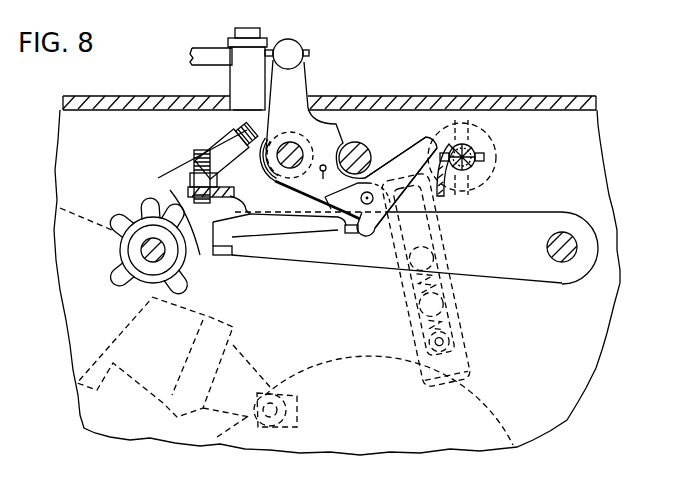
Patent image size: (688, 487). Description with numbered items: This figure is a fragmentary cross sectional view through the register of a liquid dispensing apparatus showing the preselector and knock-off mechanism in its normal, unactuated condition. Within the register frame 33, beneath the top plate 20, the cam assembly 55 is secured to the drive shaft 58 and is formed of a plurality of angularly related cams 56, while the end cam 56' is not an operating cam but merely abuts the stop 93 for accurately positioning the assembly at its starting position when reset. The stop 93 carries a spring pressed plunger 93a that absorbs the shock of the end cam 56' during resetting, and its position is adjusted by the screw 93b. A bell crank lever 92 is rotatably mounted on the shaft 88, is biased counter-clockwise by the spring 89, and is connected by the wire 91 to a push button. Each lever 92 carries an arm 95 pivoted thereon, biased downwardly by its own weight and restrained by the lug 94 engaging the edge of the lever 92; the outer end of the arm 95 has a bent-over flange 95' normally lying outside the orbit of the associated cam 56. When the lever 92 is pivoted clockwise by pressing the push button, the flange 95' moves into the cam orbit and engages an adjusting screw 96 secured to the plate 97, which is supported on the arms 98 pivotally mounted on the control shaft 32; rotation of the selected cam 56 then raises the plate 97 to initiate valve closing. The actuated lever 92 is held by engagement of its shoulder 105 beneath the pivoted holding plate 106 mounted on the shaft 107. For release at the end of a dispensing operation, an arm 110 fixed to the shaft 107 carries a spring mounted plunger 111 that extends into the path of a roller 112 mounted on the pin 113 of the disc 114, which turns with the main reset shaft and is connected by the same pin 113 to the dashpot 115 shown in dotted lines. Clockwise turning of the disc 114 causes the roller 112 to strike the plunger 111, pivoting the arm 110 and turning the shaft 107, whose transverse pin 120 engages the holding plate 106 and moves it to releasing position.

The mounting plate 20 is at (597, 103).
The control shaft 32 is at (578, 242).
The register frame 33 is at (591, 137).
The cam assembly 55 is at (137, 211).
The cam 56 is at (135, 248).
The end cam 56' is at (135, 171).
The drive shaft 58 is at (150, 265).
The shaft 88 is at (286, 142).
The spring 89 is at (276, 180).
The wire 91 is at (212, 50).
The bell crank lever 92 is at (308, 63).
The stop 93 is at (188, 153).
The spring pressed plunger 93a is at (192, 160).
The screw 93b is at (237, 123).
The lug 94 is at (344, 232).
The arm 95 is at (279, 250).
The flange 95' is at (231, 266).
The adjusting screw 96 is at (197, 160).
The plate 97 is at (228, 190).
The arm 98 is at (330, 262).
The shoulder 105 is at (424, 169).
The holding plate 106 is at (446, 183).
The shaft 107 is at (473, 148).
The arm 110 is at (448, 307).
The spring mounted plunger 111 is at (428, 364).
The roller 112 is at (243, 440).
The pin 113 is at (266, 430).
The disc 114 is at (193, 442).
The dashpot 115 is at (97, 338).
The pin 120 is at (484, 156).